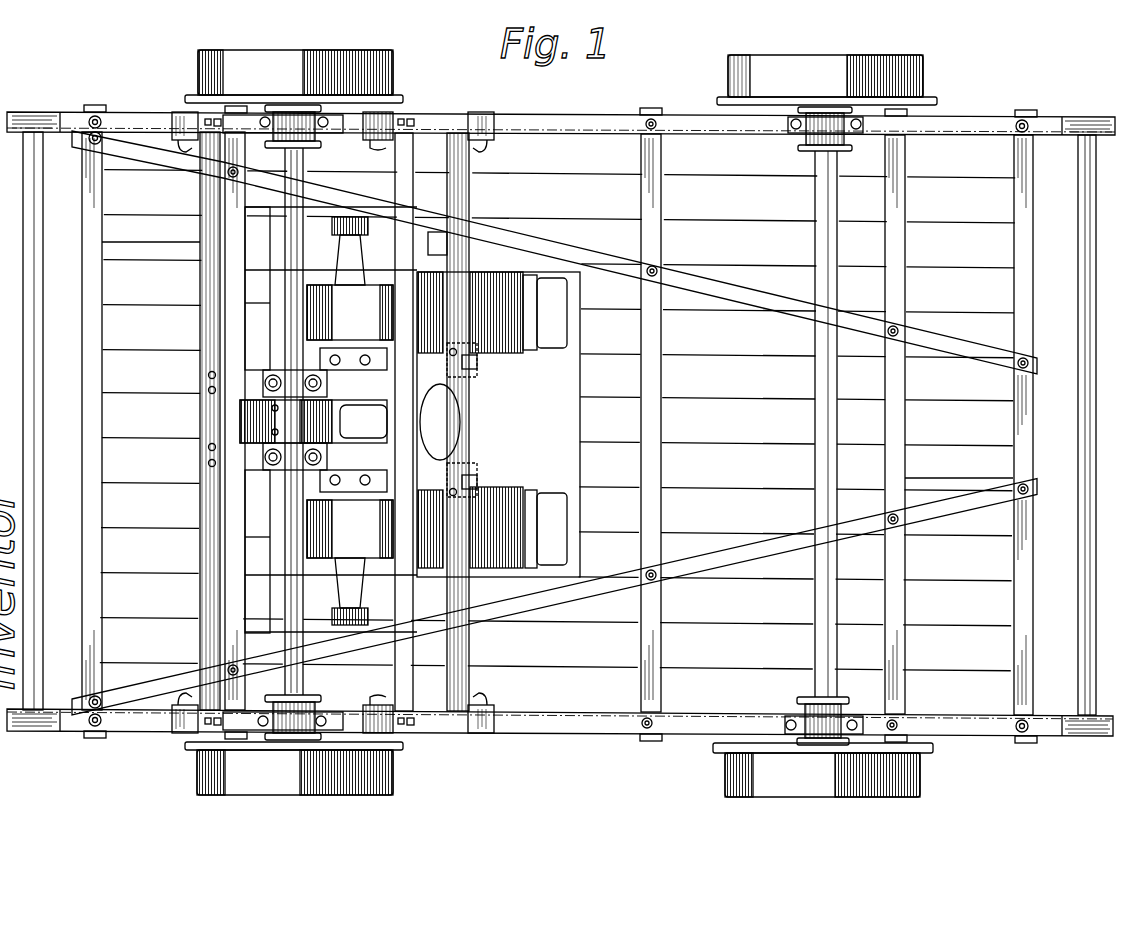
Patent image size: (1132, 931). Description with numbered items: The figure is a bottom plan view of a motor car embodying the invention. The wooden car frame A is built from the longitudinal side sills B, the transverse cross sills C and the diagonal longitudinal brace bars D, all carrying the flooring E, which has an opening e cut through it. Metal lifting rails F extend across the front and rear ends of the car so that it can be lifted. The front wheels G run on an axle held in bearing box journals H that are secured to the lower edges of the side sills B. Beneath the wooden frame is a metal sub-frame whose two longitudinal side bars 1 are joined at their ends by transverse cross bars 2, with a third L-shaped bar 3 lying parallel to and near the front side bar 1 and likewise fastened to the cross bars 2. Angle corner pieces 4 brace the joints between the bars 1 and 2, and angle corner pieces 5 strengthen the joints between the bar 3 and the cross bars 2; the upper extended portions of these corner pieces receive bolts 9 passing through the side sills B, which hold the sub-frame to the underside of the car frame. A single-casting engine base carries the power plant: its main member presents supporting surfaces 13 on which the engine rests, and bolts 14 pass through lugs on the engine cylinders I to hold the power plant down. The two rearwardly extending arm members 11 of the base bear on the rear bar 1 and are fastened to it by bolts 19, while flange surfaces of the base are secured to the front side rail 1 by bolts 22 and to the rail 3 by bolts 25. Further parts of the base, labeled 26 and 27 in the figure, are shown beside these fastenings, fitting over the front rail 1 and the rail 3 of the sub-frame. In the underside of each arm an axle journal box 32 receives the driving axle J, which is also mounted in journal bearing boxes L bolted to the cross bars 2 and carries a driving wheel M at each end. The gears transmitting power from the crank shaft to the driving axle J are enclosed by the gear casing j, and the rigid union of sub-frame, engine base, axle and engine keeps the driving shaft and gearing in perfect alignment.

The wooden car frame A is at (557, 420).
The longitudinal side sill B is at (556, 128).
The transverse cross sill C is at (95, 600).
The diagonal longitudinal brace bar D is at (787, 300).
The flooring E is at (557, 358).
The lifting rail F is at (1082, 428).
The front wheel G is at (695, 775).
The bearing box journal H is at (818, 128).
The engine cylinder I is at (507, 282).
The driving axle J is at (283, 240).
The journal bearing box L is at (293, 115).
The driving wheel M is at (404, 772).
The flooring opening e is at (412, 419).
The gear casing j is at (313, 421).
The longitudinal side bar 1 is at (200, 588).
The transverse cross bar 2 is at (486, 118).
The third L-shaped bar 3 is at (405, 635).
The angle corner piece 4 is at (188, 142).
The angle corner piece 5 is at (368, 422).
The bolt 9 is at (813, 468).
The arm member 11 is at (253, 462).
The supporting surface 13 is at (320, 360).
The bolt 14 is at (360, 366).
The bolt 19 is at (208, 375).
The bolt 22 is at (478, 368).
The bolt 25 is at (395, 350).
The brake fastening 26 is at (470, 356).
The drum 27 is at (370, 353).
The axle journal box 32 is at (270, 431).